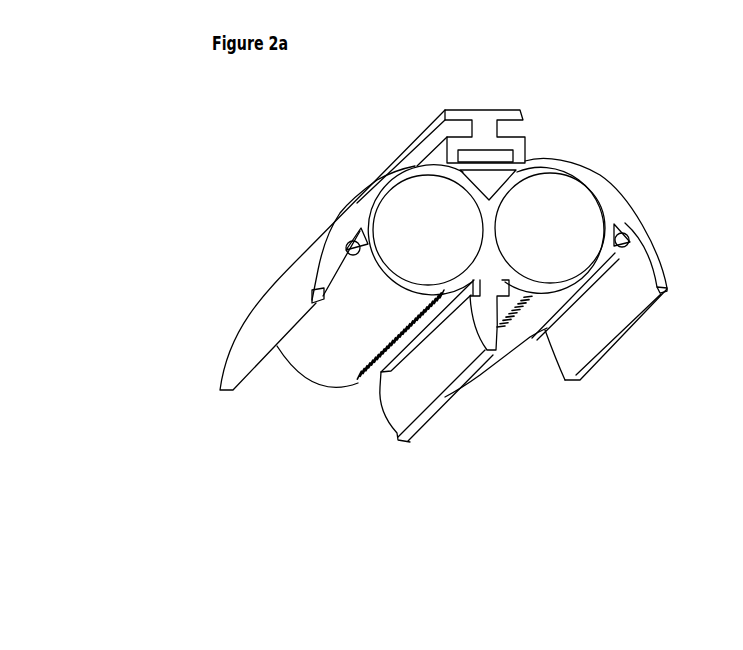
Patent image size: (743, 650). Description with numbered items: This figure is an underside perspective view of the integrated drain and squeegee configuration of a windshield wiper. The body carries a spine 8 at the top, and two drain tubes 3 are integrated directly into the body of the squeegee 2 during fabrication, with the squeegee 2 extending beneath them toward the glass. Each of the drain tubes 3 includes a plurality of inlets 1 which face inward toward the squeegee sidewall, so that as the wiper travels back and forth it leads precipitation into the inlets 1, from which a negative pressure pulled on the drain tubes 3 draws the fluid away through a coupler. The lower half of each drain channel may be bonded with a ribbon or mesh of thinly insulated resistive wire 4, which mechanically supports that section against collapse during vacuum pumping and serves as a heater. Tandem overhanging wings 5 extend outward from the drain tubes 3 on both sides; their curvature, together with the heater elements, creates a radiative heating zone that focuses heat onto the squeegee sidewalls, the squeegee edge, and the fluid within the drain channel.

The inlets 1 is at (443, 297).
The squeegee 2 is at (452, 358).
The drain tube 3 is at (438, 217).
The resistive wire 4 is at (355, 250).
The wings 5 is at (290, 291).
The spine 8 is at (480, 118).